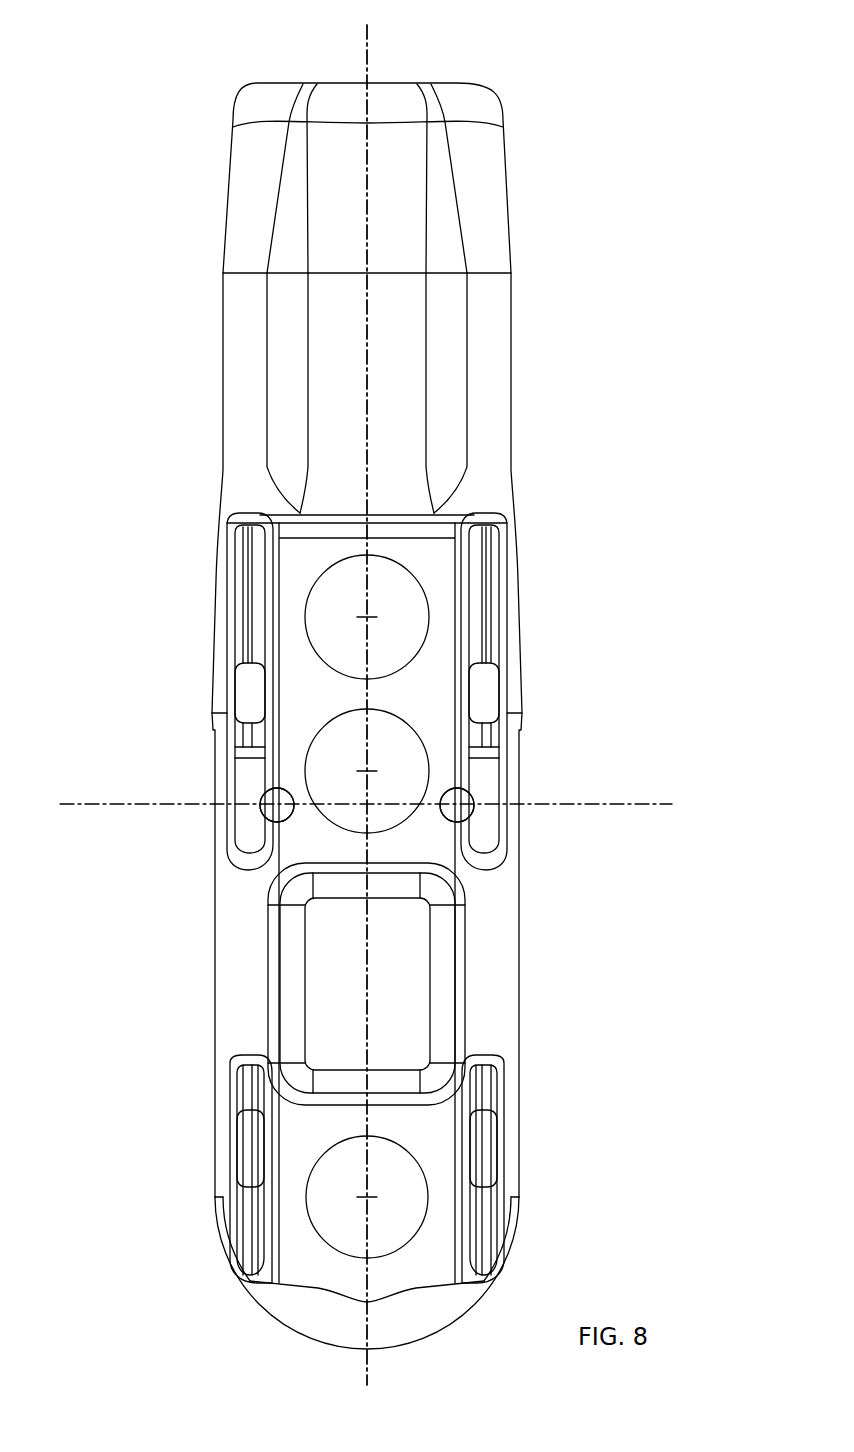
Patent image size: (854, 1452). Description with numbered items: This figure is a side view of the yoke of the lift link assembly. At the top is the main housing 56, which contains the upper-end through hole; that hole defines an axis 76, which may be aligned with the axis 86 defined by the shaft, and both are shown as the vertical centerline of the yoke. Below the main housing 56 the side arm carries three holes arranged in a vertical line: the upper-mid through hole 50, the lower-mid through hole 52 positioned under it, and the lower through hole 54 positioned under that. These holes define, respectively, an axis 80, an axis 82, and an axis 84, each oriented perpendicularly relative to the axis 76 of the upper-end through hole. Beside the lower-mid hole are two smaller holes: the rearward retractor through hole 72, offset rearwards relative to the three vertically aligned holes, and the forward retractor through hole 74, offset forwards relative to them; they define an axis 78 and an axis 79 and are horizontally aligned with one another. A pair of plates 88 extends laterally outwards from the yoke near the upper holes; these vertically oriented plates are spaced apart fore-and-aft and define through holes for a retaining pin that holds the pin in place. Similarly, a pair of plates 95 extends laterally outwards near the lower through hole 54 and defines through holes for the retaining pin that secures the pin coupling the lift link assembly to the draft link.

The main housing 56 is at (490, 200).
The axis 76 is at (367, 42).
The axis 86 is at (449, 699).
The pair of plates 88 is at (232, 557).
The pair of plates 95 is at (237, 1090).
The upper-mid through hole 50 is at (428, 600).
The lower-mid through hole 52 is at (425, 740).
The lower through hole 54 is at (425, 1170).
The axis 80 is at (371, 618).
The axis 82 is at (372, 771).
The axis 84 is at (372, 1197).
The rearward retractor through hole 72 is at (290, 817).
The forward retractor through hole 74 is at (447, 813).
The axis 78 is at (272, 802).
The axis 79 is at (462, 802).